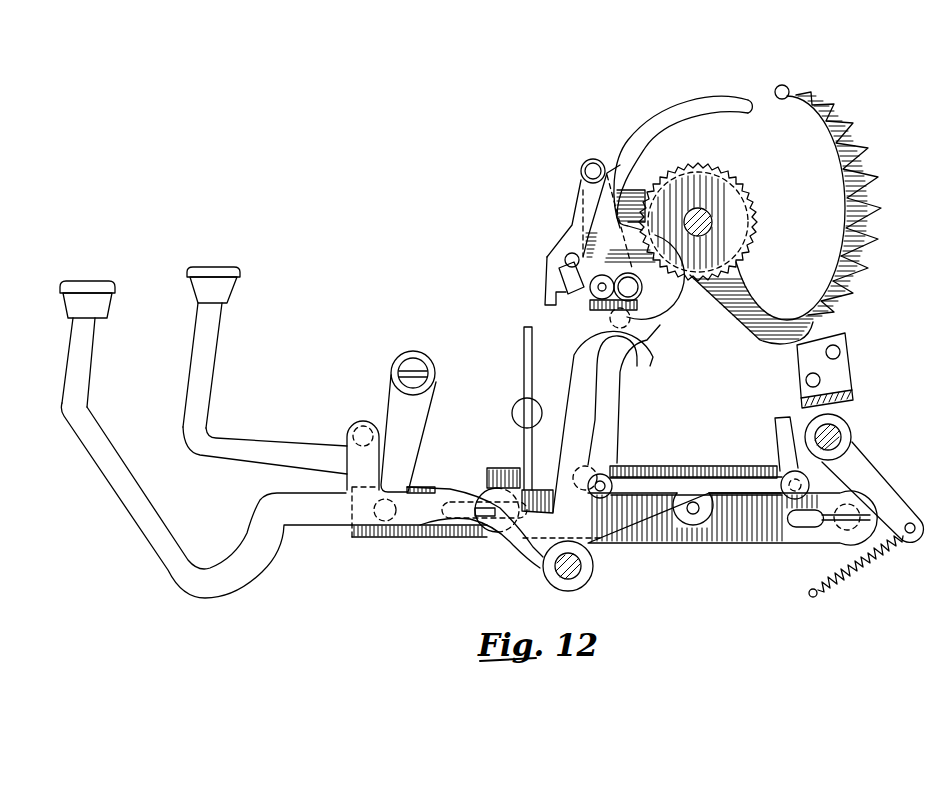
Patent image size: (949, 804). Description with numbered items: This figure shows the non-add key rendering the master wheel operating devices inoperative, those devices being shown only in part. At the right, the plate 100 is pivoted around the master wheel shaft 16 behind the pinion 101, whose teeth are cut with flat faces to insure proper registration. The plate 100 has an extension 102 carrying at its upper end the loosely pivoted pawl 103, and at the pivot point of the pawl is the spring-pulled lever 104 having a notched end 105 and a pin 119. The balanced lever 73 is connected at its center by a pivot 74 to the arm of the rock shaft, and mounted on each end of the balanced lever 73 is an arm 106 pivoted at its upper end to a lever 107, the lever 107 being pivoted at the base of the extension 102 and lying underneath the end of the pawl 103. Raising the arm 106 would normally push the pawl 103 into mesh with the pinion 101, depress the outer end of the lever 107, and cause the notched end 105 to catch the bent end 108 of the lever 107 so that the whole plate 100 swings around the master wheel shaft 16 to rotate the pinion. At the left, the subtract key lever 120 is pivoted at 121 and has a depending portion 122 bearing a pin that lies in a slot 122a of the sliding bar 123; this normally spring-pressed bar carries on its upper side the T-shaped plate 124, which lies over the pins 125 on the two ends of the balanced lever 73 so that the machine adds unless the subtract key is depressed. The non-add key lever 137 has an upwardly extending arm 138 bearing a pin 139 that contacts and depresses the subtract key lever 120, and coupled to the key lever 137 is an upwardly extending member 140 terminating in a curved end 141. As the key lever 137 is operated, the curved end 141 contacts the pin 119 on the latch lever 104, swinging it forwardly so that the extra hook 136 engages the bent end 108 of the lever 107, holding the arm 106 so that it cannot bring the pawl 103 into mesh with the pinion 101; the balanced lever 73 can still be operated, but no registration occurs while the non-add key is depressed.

The curved end 141 is at (693, 108).
The extension 102 is at (628, 188).
The pinion 101 is at (713, 172).
The master wheel shaft 16 is at (712, 215).
The plate 100 is at (733, 238).
The pawl 103 is at (593, 200).
The lever 104 is at (577, 220).
The pin 119 is at (565, 260).
The bent end 108 is at (559, 273).
The notched end 105 is at (545, 300).
The hook 136 is at (582, 293).
The lever 107 is at (612, 302).
The arm 106 is at (610, 387).
The upwardly extending member 140 is at (587, 422).
The key lever 137 is at (83, 420).
The subtract key lever 120 is at (203, 368).
The pin 139 is at (366, 428).
The pivot 121 is at (415, 372).
The depending portion 122 is at (403, 433).
The upwardly extending arm 138 is at (340, 442).
The slot 122a is at (398, 490).
The pin 125 is at (597, 480).
The T-shaped plate 124 is at (665, 472).
The pivot 74 is at (687, 517).
The balanced lever 73 is at (712, 487).
The sliding bar 123 is at (648, 517).